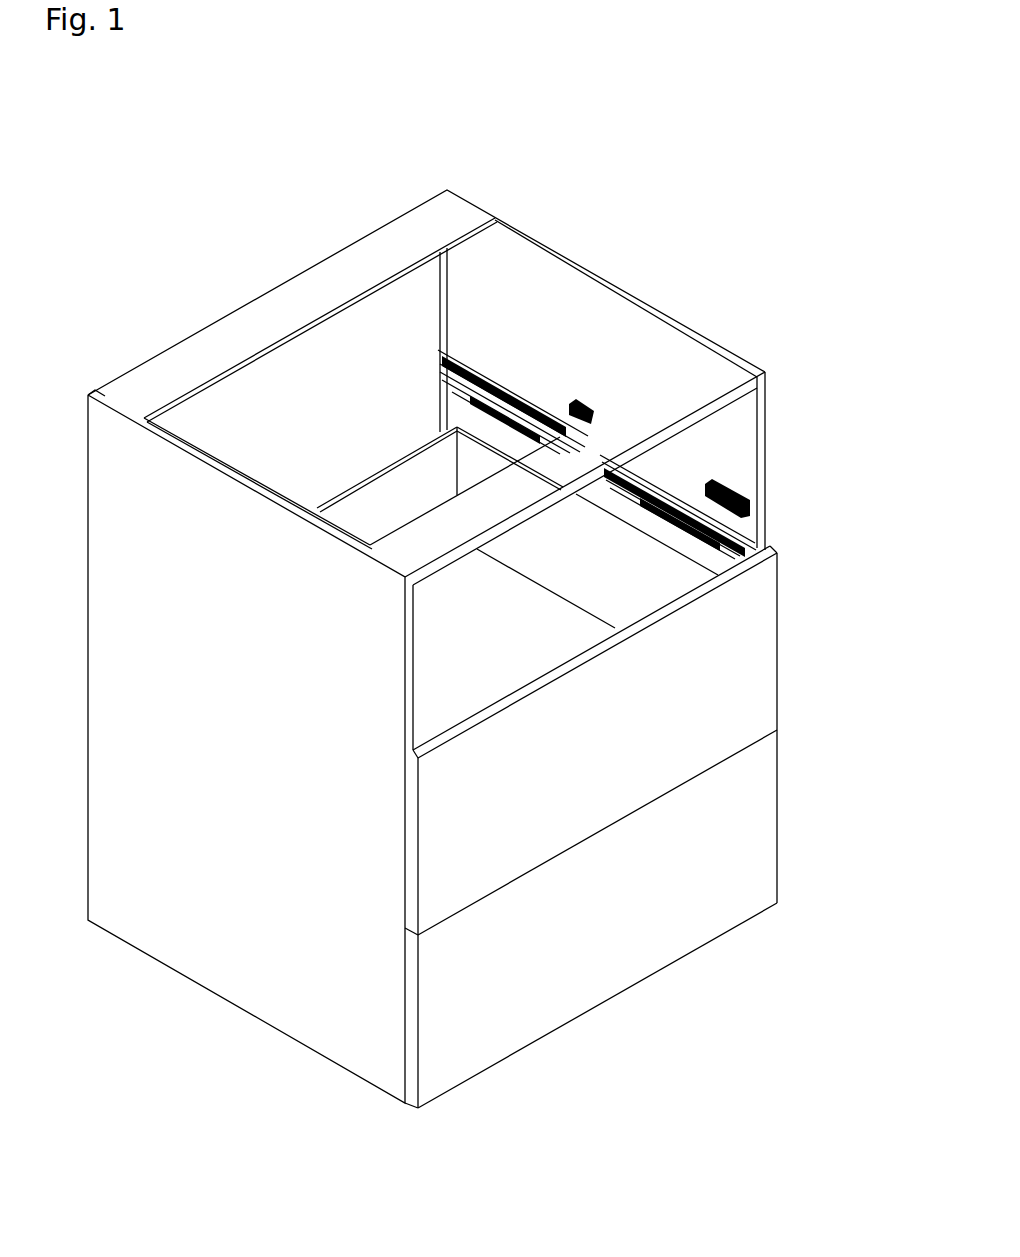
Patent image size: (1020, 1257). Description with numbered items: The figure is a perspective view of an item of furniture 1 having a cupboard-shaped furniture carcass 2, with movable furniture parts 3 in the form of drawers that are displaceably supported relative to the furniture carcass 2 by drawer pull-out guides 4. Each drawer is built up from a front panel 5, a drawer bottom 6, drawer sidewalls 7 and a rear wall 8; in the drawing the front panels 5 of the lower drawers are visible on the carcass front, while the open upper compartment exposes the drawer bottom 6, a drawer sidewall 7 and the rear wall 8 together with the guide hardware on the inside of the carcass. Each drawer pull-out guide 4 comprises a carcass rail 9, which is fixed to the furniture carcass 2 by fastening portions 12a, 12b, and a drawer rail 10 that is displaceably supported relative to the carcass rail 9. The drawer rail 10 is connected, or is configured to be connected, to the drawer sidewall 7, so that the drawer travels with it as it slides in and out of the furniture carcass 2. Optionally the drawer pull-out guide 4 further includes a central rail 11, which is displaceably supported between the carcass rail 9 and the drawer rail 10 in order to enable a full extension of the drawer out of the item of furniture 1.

The item of furniture 1 is at (168, 1035).
The furniture carcass 2 is at (163, 940).
The movable furniture part 3 is at (800, 648).
The drawer pull-out guide 4 is at (548, 384).
The front panel 5 is at (611, 755).
The drawer bottom 6 is at (483, 653).
The drawer sidewall 7 is at (483, 370).
The rear wall 8 is at (362, 482).
The carcass rail 9 is at (512, 385).
The drawer rail 10 is at (698, 482).
The central rail 11 is at (742, 543).
The fastening portion 12a is at (582, 410).
The fastening portion 12b is at (722, 492).